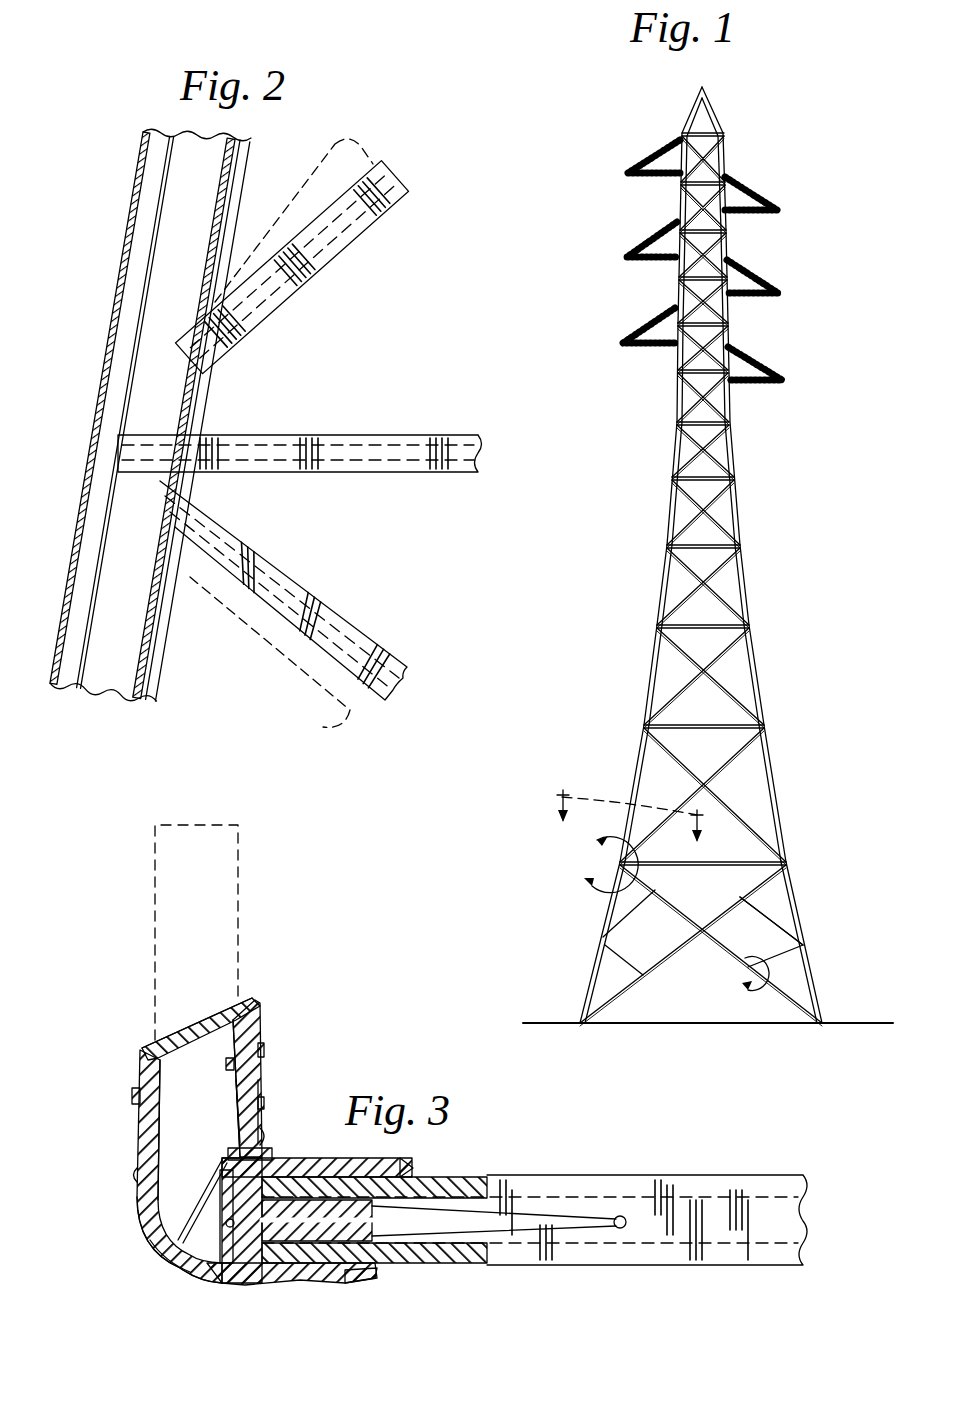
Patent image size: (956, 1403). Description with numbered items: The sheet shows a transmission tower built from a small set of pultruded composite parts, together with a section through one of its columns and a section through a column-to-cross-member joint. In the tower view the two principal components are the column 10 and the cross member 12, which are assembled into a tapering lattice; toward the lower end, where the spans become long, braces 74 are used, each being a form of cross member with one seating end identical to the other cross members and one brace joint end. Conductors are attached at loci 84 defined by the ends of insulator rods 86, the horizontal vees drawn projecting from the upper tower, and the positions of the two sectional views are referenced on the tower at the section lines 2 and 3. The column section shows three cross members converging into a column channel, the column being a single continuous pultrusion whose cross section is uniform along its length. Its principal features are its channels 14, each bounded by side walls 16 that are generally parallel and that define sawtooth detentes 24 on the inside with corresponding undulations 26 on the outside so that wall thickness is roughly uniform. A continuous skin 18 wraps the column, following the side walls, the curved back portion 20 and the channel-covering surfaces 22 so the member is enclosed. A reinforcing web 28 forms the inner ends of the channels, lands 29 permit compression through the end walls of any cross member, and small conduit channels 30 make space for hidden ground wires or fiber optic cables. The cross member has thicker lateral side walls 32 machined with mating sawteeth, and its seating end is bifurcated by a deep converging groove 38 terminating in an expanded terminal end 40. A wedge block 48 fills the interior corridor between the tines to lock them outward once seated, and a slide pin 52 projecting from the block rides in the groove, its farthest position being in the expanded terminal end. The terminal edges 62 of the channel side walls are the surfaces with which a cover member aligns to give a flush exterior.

In FIG. 1, the section line 2— 2 is at (599, 871).
In FIG. 1, the section line 3— 3 is at (625, 825).
In FIG. 1, the column 10 is at (777, 731).
In FIG. 2, the column 10 is at (126, 238).
In FIG. 3, the column 10 is at (150, 1268).
In FIG. 1, the cross member 12 is at (723, 570).
In FIG. 2, the cross member 12 is at (270, 323).
In FIG. 3, the cross member 12 is at (603, 1269).
In FIG. 1, the channel 14 is at (750, 996).
In FIG. 3, the channel 14 is at (190, 1123).
In FIG. 3, the side wall 16 is at (235, 1093).
In FIG. 3, the skin 18 is at (170, 1037).
In FIG. 3, the curved back portion 20 is at (190, 1267).
In FIG. 2, the channel-covering surface 22 is at (233, 160).
In FIG. 3, the channel-covering surface 22 is at (200, 1020).
In FIG. 3, the sawtooth detente 24 is at (273, 1100).
In FIG. 3, the rib 26 is at (263, 1050).
In FIG. 3, the reinforcing web 28 is at (203, 1207).
In FIG. 3, the land 29 is at (265, 1133).
In FIG. 3, the conduit channel 30 is at (195, 1247).
In FIG. 3, the lateral side wall 32 is at (487, 1176).
In FIG. 3, the converging groove 38 is at (440, 1227).
In FIG. 3, the expanded terminal end 40 is at (623, 1217).
In FIG. 3, the wedge block 48 is at (297, 1282).
In FIG. 3, the slide pin 52 is at (233, 1282).
In FIG. 3, the terminal edge 62 is at (413, 1167).
In FIG. 1, the brace 74 is at (781, 950).
In FIG. 1, the locus 84 is at (774, 207).
In FIG. 1, the insulator rod 86 is at (753, 217).